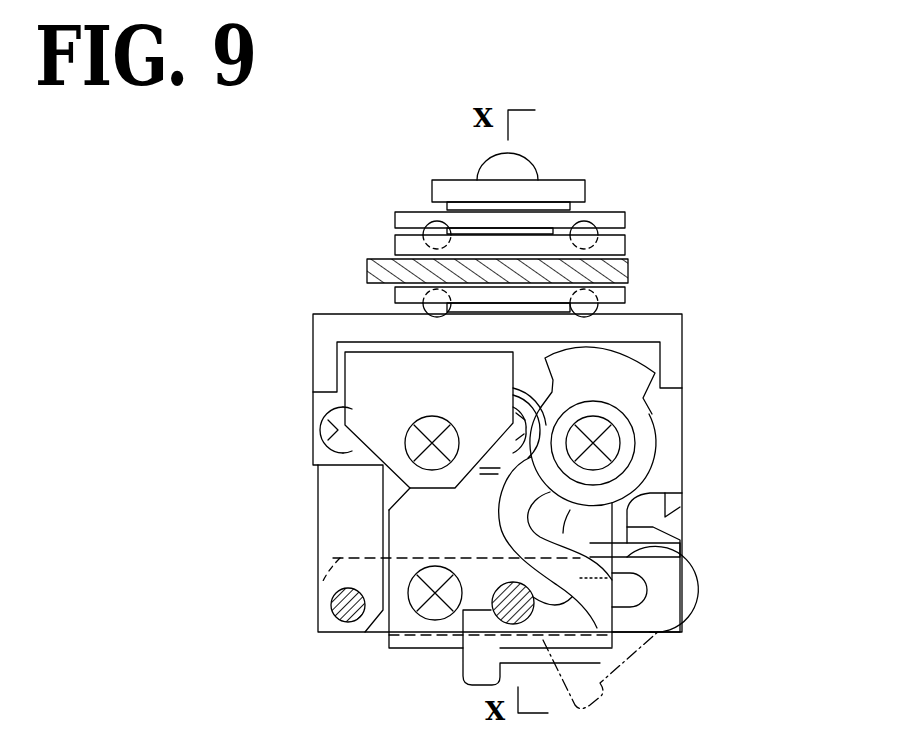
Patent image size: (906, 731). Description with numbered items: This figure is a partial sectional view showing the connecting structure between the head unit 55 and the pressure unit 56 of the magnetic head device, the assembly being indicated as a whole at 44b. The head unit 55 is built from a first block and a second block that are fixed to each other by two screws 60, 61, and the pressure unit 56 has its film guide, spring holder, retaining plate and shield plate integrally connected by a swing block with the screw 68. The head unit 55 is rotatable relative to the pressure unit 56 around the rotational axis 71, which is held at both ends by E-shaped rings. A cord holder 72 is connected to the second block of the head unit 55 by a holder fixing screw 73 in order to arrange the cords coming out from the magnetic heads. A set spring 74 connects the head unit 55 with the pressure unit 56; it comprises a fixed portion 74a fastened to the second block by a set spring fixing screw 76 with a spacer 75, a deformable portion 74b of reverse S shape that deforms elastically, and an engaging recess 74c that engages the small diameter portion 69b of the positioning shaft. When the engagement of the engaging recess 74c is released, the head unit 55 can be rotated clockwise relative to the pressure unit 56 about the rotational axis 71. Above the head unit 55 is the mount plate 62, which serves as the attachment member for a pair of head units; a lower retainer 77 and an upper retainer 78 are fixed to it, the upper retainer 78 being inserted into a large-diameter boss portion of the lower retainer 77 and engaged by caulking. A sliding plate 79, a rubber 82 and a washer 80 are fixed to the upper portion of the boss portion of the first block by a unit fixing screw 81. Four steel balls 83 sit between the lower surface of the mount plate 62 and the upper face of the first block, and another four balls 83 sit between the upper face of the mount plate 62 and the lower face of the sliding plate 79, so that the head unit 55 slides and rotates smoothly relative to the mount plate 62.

The turntable portion (turntable 44) 44b is at (302, 228).
The head unit 55 is at (722, 360).
The pressure unit 56 is at (712, 623).
The screw 60 is at (507, 445).
The screw 61 is at (322, 428).
The mount plate 62 is at (380, 262).
The screw 68 is at (432, 567).
The small diameter portion of positioning shaft 69b is at (500, 623).
The rotational axis 71 is at (333, 605).
The cord holder 72 is at (338, 365).
The holder fixing screw 73 is at (425, 425).
The set spring 74 is at (662, 437).
The fixed portion 74a is at (645, 465).
The deformable portion 74b is at (677, 572).
The engaging recess 74c is at (612, 645).
The spacer 75 is at (623, 420).
The set spring fixing screw 76 is at (592, 418).
The lower retainer 77 is at (618, 295).
The upper retainer 78 is at (618, 245).
The sliding plate 79 is at (618, 220).
The washer 80 is at (580, 188).
The unit fixing screw 81 is at (520, 170).
The rubber 82 is at (458, 202).
The steel balls 83 is at (435, 228).